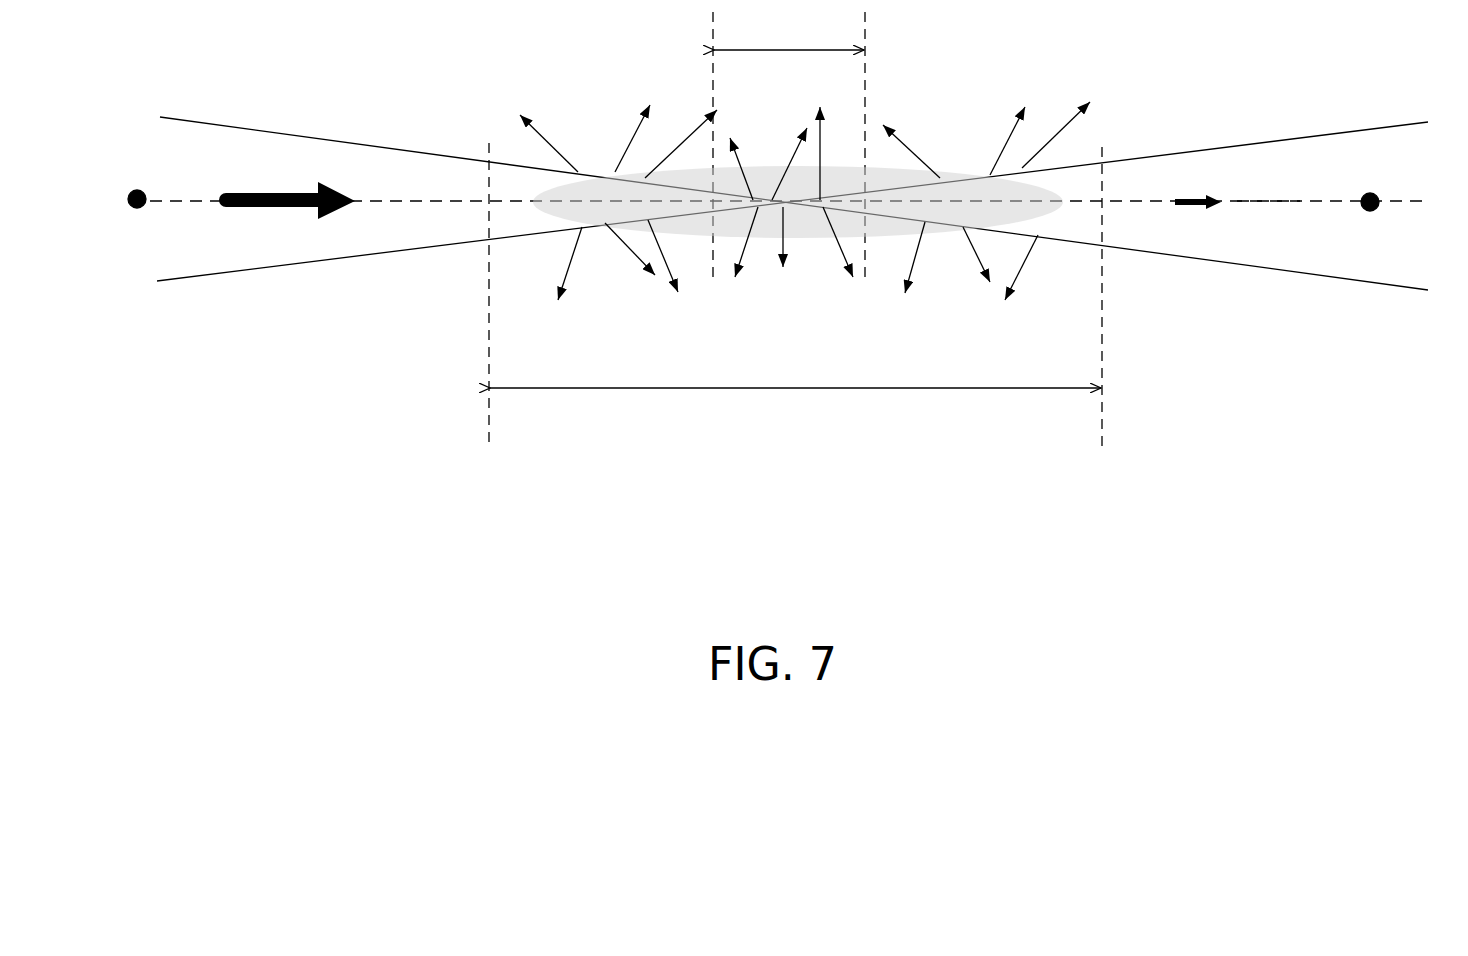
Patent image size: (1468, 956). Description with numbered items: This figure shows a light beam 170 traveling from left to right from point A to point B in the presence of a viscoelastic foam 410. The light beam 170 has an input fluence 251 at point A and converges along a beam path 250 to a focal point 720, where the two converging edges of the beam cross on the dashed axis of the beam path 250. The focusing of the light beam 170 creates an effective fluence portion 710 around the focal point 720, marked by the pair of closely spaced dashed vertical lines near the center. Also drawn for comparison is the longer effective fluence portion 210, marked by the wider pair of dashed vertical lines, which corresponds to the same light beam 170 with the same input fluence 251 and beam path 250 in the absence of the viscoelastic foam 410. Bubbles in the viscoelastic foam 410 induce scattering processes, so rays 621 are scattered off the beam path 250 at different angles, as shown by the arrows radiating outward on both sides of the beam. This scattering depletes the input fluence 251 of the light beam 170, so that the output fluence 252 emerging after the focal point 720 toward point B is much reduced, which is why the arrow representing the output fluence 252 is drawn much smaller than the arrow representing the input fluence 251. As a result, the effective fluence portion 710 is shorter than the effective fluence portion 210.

The light beam 170 is at (216, 174).
The input fluence 251 is at (283, 206).
The output fluence 252 is at (1197, 207).
The beam path 250 is at (1237, 202).
The effective fluence portion 210 is at (795, 295).
The effective fluence portion 710 is at (755, 48).
The focal point 720 is at (786, 212).
The rays 621 is at (667, 277).
The viscoelastic foam 410 is at (600, 167).